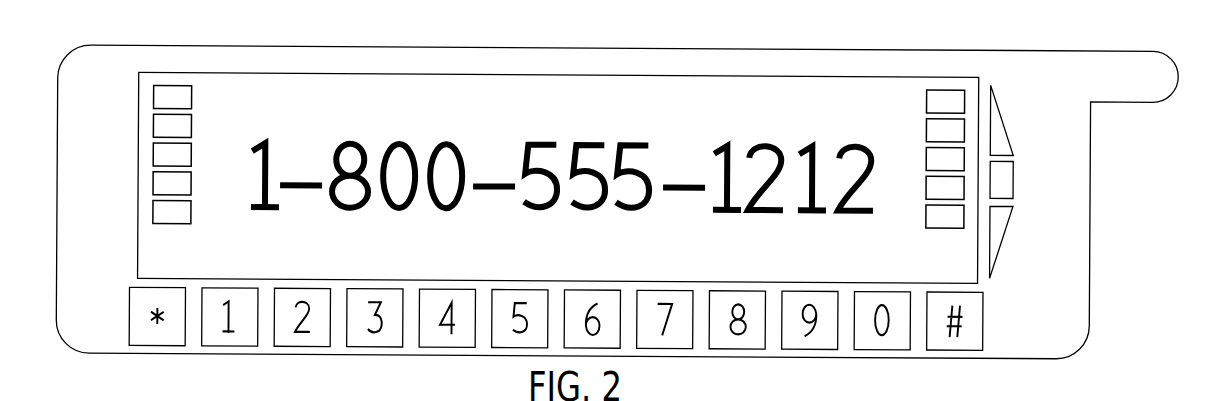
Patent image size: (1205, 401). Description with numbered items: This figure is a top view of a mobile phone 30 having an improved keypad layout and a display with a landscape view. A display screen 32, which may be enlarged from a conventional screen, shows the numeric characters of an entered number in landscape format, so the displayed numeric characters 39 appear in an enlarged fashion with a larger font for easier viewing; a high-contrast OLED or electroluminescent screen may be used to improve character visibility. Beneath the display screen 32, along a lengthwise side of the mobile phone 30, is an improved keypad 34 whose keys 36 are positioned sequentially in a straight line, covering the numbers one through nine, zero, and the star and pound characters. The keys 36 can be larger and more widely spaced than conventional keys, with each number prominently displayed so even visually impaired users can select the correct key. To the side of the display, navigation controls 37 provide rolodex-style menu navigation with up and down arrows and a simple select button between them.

The mobile phone 30 is at (894, 38).
The display screen 32 is at (717, 88).
The keypad 34 is at (572, 344).
The key 36 is at (233, 346).
The navigation controls 37 is at (1015, 174).
The displayed numeric characters 39 is at (545, 136).